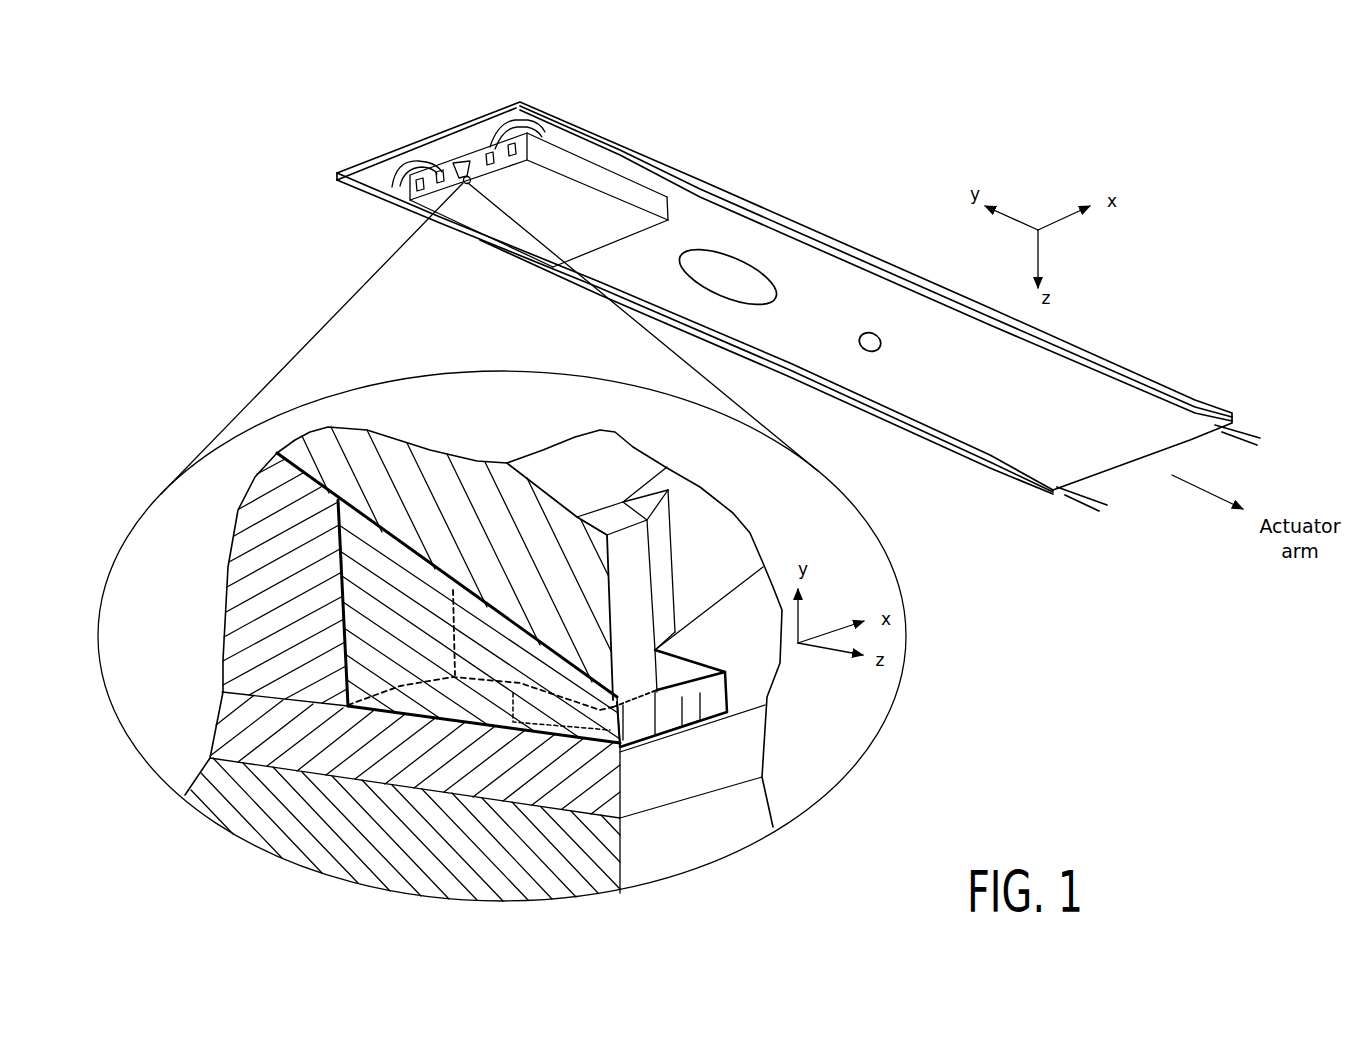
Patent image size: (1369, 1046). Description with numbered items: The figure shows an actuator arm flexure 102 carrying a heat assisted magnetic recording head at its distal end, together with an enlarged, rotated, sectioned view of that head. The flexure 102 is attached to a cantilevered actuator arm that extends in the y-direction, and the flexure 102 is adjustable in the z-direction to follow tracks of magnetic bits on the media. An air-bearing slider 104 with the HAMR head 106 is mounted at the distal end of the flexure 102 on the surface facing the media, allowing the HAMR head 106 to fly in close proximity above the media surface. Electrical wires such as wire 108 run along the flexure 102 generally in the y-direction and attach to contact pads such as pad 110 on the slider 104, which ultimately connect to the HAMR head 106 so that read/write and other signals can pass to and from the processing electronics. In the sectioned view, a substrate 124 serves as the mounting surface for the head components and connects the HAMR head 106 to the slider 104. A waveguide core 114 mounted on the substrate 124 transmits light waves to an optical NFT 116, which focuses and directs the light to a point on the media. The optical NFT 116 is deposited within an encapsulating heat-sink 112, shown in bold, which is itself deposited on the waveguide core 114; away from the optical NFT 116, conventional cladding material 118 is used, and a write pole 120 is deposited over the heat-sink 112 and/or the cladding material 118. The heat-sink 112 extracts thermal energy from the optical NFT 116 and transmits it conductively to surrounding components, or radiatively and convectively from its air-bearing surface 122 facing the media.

The actuator arm flexure 102 is at (959, 401).
The air-bearing slider 104 is at (566, 228).
The HAMR head 106 is at (461, 168).
The wire 108 is at (768, 222).
The pad 110 is at (530, 145).
The heat-sink 112 is at (382, 637).
The waveguide core 114 is at (376, 763).
The optical NFT 116 is at (667, 712).
The cladding material 118 is at (271, 611).
The write pole 120 is at (484, 551).
The air-bearing surface 122 is at (723, 670).
The substrate 124 is at (376, 846).